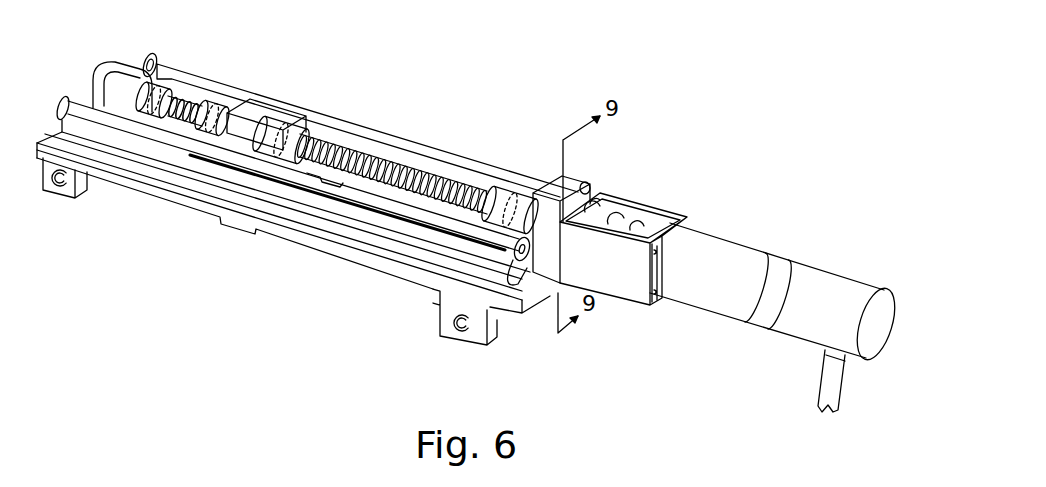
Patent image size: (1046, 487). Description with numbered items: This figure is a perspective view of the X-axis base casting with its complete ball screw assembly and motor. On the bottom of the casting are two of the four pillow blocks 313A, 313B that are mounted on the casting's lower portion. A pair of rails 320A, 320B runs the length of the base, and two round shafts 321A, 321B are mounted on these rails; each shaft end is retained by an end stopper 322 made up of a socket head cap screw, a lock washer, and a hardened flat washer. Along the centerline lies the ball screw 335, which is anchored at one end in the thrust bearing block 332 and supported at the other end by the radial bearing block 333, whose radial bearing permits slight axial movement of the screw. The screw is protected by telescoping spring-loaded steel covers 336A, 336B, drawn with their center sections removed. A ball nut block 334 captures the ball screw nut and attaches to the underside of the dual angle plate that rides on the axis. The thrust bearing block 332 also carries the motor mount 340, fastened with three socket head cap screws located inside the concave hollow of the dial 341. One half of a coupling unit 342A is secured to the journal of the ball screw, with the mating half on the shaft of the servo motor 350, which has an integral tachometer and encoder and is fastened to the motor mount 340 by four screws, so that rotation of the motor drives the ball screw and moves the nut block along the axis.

The pillow block 313A is at (442, 316).
The pillow block 313B is at (83, 188).
The rail 320A is at (467, 137).
The rail 320B is at (330, 200).
The round shaft 321A is at (410, 109).
The round shaft 321B is at (252, 165).
The end stopper 322 is at (515, 284).
The thrust bearing block 332 is at (565, 197).
The radial bearing block 333 is at (110, 72).
The ball nut block 334 is at (237, 130).
The ball screw 335 is at (173, 100).
The telescoping spring-loaded steel cover 336A is at (343, 88).
The telescoping spring-loaded steel cover 336B is at (143, 82).
The motor mount 340 is at (618, 288).
The dial 341 is at (597, 205).
The coupling unit half 342A is at (635, 230).
The motor 350 is at (720, 270).